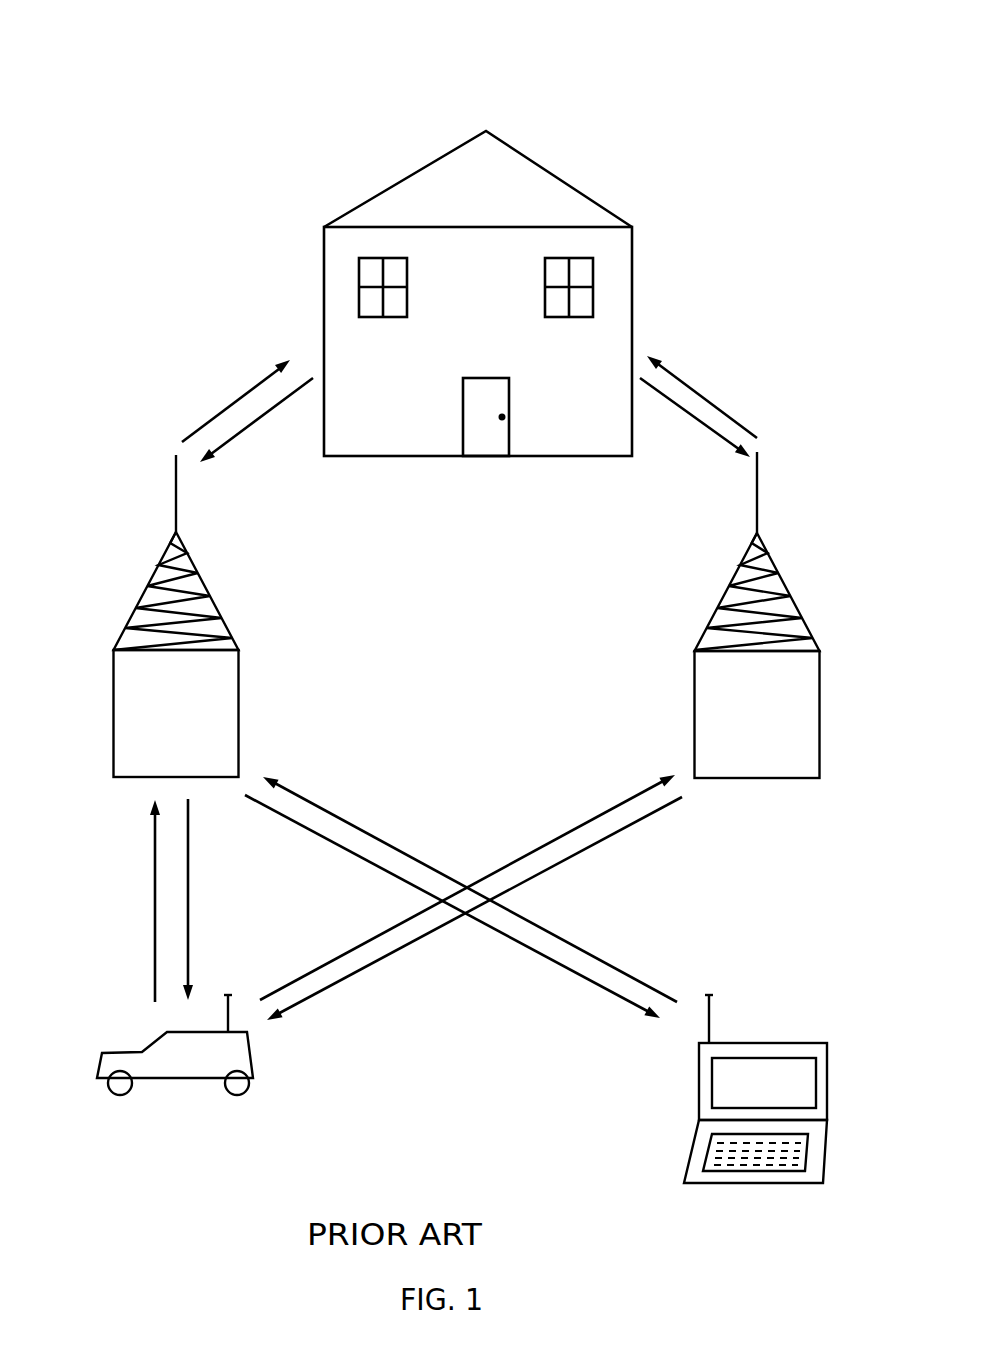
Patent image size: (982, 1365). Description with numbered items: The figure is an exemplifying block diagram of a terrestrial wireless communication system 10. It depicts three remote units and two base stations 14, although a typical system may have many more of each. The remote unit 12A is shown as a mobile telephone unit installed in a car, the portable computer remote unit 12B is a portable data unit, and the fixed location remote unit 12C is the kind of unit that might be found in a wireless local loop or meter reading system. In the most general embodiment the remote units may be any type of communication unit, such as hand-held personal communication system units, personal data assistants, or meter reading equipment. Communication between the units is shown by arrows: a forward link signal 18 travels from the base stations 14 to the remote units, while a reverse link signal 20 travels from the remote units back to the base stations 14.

The terrestrial wireless communication system 10 is at (464, 591).
The remote unit 12A is at (122, 1052).
The portable computer remote unit 12B is at (803, 1042).
The fixed location remote unit 12C is at (557, 173).
The base station 14 is at (145, 588).
The forward link signal 18 is at (250, 387).
The reverse link signal 20 is at (270, 413).